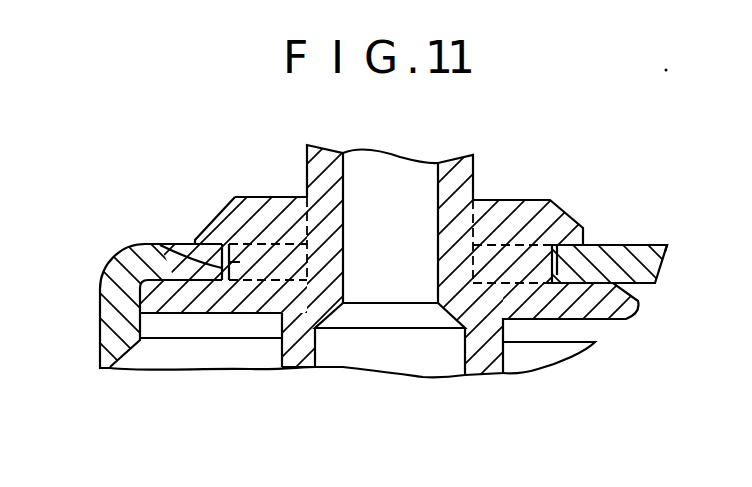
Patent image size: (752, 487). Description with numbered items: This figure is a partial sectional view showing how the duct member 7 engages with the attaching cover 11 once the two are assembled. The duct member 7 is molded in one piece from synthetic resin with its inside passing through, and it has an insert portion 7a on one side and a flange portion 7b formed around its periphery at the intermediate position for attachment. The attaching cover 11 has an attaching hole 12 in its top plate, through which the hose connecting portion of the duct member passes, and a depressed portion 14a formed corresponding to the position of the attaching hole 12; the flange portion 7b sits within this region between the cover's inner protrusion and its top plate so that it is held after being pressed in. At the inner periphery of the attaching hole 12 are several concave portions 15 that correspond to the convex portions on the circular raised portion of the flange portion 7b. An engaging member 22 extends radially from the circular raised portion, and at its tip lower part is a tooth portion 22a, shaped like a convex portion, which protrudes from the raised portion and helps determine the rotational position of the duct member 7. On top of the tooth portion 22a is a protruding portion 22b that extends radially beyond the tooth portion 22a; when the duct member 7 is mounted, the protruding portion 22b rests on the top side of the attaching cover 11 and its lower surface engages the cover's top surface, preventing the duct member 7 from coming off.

The duct member 7 is at (458, 144).
The insert portion 7a is at (489, 352).
The flange portion 7b is at (612, 305).
The attaching cover 11 is at (92, 330).
The attaching hole 12 is at (560, 266).
The depressed portion 14a is at (110, 277).
The concave portion 15 is at (231, 262).
The engaging member 22 is at (265, 222).
The tooth portion 22a is at (156, 243).
The protruding portion 22b is at (215, 237).